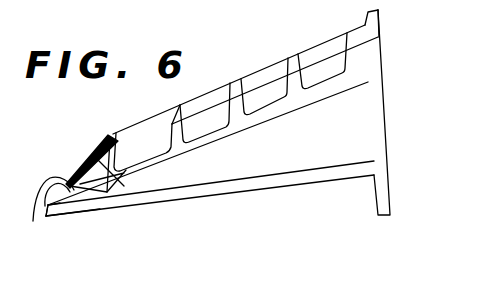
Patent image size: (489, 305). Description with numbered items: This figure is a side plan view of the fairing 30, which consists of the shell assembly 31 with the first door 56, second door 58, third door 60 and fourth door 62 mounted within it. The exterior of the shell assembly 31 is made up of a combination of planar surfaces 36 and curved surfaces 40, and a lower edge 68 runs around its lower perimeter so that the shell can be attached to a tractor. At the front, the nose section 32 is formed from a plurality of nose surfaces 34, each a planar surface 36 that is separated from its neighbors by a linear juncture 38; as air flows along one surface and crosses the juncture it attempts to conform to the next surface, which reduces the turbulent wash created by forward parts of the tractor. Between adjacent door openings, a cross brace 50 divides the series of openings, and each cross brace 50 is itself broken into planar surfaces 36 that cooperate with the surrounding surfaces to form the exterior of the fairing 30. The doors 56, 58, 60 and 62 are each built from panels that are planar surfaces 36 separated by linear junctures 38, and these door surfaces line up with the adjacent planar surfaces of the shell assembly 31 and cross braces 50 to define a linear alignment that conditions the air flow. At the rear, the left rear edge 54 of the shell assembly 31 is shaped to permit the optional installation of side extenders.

The fairing 30 is at (347, 232).
The shell assembly 31 is at (223, 168).
The nose section 32 is at (44, 208).
The nose surface 34 is at (78, 167).
The planar surface 36 is at (86, 162).
The linear juncture 38 is at (40, 187).
The curved surface 40 is at (311, 152).
The cross brace 50 is at (178, 116).
The left rear edge 54 is at (0, 105).
The first door 56 is at (138, 130).
The second door 58 is at (203, 104).
The third door 60 is at (267, 77).
The fourth door 62 is at (328, 50).
The lower edge 68 is at (98, 210).